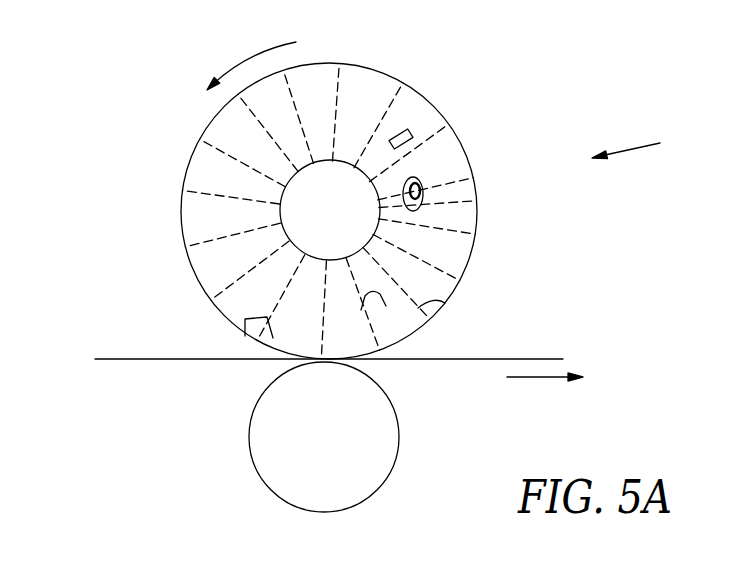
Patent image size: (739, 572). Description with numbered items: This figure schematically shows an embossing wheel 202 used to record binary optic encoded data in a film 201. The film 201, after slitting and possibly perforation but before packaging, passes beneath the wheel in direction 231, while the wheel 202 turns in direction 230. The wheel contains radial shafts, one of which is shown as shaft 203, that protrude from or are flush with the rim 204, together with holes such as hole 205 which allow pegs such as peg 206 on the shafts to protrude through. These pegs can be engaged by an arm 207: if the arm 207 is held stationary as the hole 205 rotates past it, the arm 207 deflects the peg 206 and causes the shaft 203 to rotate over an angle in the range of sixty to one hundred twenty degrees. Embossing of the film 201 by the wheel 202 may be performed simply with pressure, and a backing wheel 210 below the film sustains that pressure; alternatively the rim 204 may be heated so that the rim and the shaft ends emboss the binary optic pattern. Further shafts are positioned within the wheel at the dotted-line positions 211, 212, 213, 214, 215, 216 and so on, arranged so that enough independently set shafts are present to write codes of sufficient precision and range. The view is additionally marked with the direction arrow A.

The film 201 is at (425, 359).
The embossing wheel 202 is at (138, 200).
The radial shaft 203 is at (472, 185).
The rim 204 is at (192, 267).
The hole 205 is at (424, 208).
The peg 206 is at (426, 193).
The arm 207 is at (405, 128).
The backing wheel 210 is at (260, 440).
The shaft position 211 is at (455, 233).
The shaft position 212 is at (443, 270).
The shaft position 213 is at (445, 303).
The shaft position 214 is at (382, 304).
The shaft position 215 is at (325, 327).
The shaft position 216 is at (245, 320).
The direction of wheel rotation 230 is at (260, 51).
The direction of film travel 231 is at (527, 377).
The viewing direction A is at (637, 148).